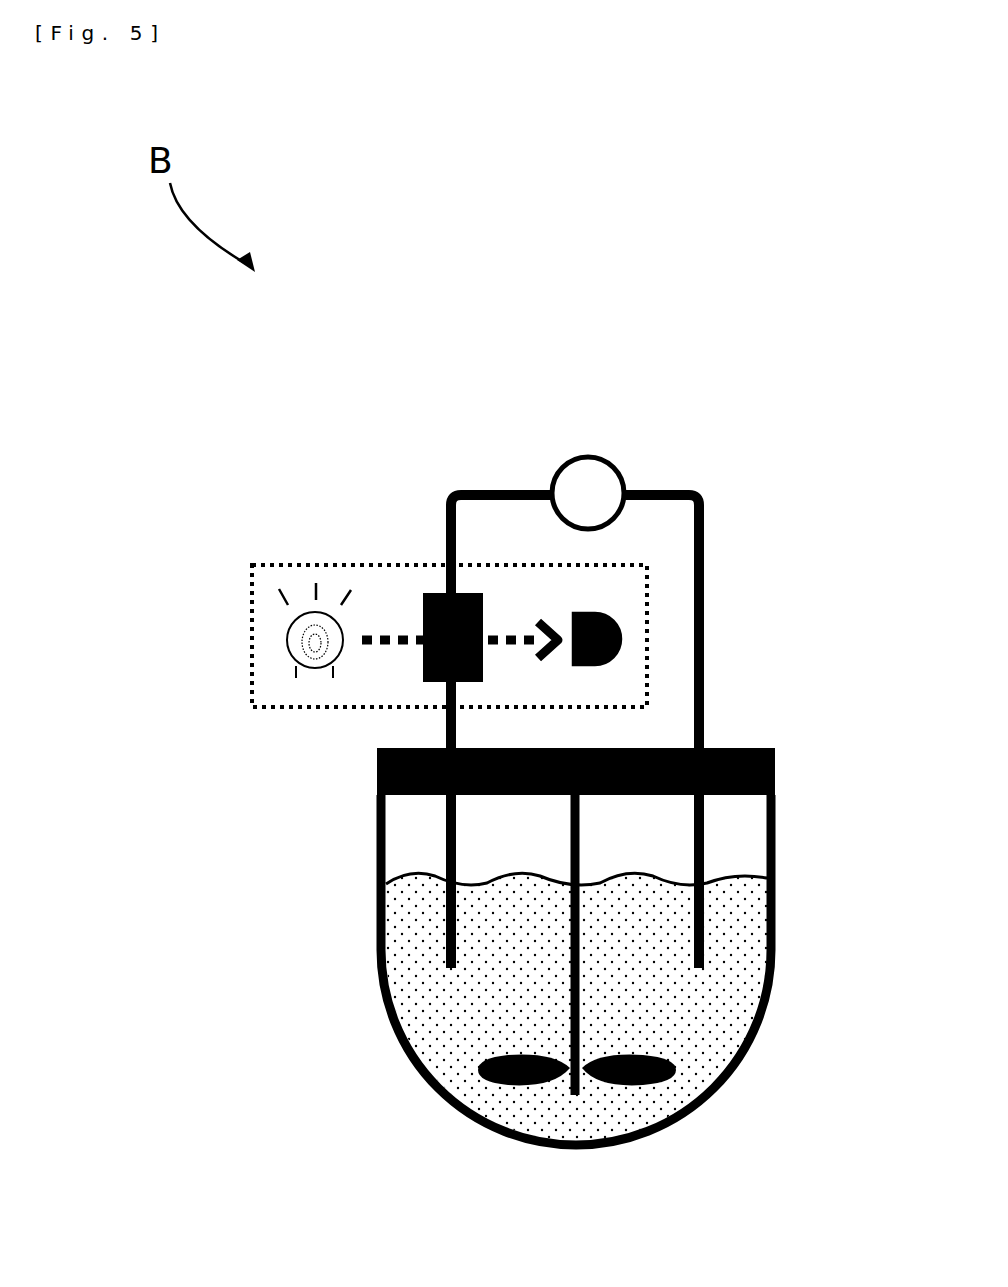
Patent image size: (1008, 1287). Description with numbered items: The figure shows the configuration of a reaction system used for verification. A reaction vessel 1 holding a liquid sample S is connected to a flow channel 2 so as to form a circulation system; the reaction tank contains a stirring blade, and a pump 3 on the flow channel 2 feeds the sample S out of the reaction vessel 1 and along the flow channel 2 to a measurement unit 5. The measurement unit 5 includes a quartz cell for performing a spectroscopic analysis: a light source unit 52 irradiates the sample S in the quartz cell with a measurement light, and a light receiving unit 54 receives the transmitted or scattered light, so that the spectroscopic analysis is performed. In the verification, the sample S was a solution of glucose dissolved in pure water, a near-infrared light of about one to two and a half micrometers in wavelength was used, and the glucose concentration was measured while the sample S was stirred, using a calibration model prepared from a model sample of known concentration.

The reaction vessel 1 is at (412, 1072).
The flow channel 2 is at (706, 690).
The pump 3 is at (600, 456).
The measurement unit 5 is at (433, 598).
The light source unit 52 is at (287, 641).
The light receiving unit 54 is at (626, 641).
The sample S is at (737, 1012).